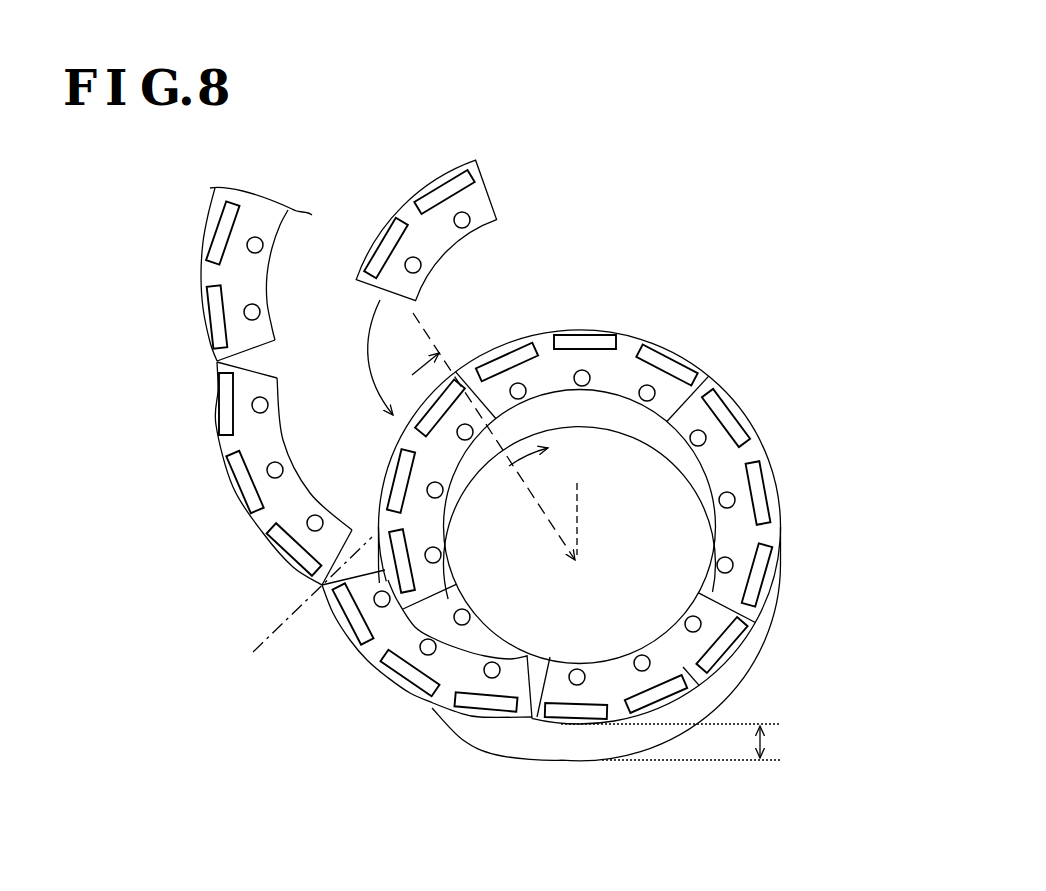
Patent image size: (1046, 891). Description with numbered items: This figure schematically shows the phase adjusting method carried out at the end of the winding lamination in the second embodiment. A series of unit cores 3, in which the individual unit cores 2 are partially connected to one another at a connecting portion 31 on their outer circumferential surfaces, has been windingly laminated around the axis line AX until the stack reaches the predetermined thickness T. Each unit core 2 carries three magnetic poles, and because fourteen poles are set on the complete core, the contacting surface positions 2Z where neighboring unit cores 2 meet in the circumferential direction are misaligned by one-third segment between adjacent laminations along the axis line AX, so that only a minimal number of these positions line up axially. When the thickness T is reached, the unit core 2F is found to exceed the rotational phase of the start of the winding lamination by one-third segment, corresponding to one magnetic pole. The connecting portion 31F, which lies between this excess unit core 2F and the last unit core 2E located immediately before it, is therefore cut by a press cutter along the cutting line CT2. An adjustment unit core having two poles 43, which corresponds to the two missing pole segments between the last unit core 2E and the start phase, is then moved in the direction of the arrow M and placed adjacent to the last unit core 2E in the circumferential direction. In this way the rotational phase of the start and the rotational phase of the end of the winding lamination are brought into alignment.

The unit core 2 is at (540, 333).
The contacting surface position 2Z is at (710, 374).
The last unit core 2E is at (457, 680).
The unit core 2F is at (253, 535).
The series of unit cores 3 is at (182, 269).
The connecting portion 31 is at (216, 362).
The connecting portion 31F is at (323, 587).
The unit core having two poles 43 is at (399, 196).
The cutting line CT2 is at (297, 612).
The predetermined thickness T is at (677, 742).
The arrow M is at (364, 357).
The axis line AX is at (600, 519).